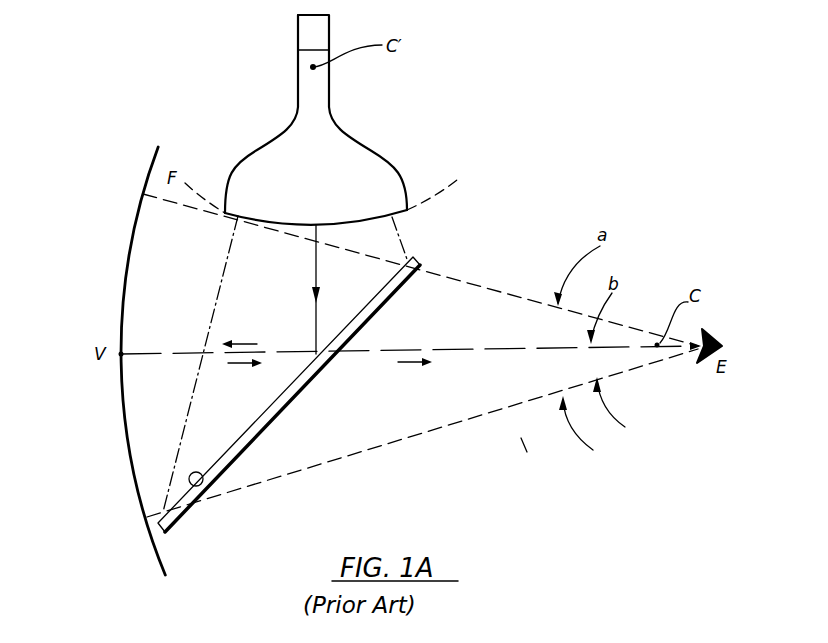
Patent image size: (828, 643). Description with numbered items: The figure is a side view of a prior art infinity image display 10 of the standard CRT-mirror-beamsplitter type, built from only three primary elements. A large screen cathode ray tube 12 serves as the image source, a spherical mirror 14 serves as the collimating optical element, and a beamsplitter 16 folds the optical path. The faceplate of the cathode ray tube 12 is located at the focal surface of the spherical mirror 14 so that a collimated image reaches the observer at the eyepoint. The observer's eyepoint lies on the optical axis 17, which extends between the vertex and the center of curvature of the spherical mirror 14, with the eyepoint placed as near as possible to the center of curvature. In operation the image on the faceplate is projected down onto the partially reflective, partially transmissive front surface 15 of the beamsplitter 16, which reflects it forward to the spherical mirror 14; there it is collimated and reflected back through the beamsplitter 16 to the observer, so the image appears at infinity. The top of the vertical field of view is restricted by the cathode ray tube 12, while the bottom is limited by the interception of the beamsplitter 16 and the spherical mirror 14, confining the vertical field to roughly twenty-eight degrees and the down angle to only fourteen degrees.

The infinity image display 10 is at (566, 166).
The cathode ray tube 12 is at (355, 160).
The spherical mirror 14 is at (126, 272).
The front surface 15 is at (196, 486).
The beamsplitter 16 is at (415, 256).
The optical axis 17 is at (447, 352).